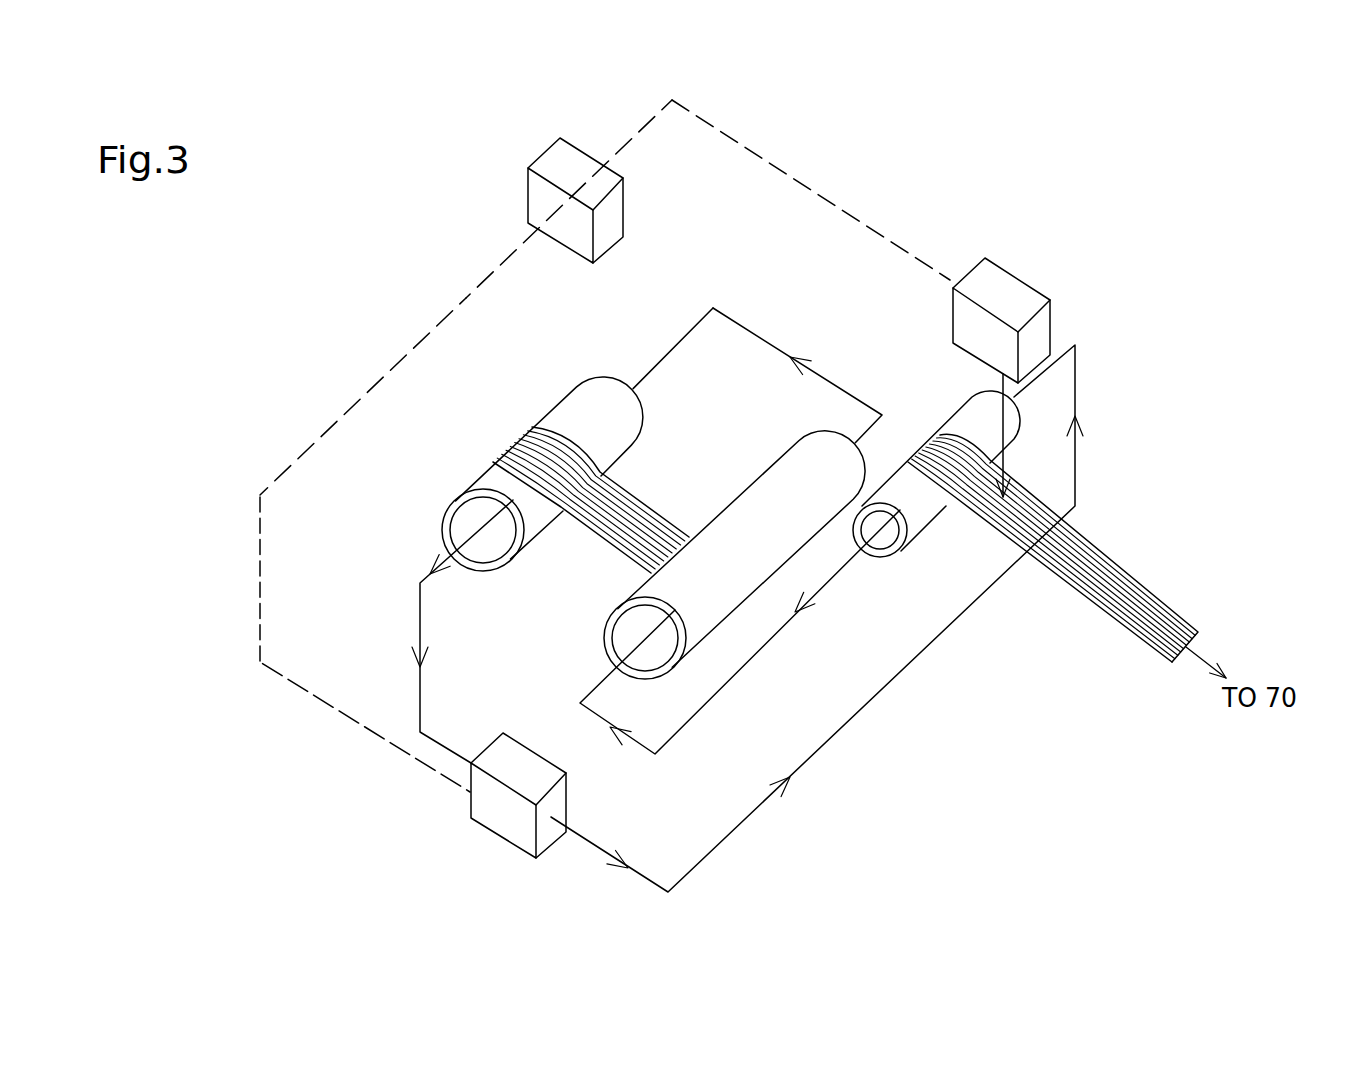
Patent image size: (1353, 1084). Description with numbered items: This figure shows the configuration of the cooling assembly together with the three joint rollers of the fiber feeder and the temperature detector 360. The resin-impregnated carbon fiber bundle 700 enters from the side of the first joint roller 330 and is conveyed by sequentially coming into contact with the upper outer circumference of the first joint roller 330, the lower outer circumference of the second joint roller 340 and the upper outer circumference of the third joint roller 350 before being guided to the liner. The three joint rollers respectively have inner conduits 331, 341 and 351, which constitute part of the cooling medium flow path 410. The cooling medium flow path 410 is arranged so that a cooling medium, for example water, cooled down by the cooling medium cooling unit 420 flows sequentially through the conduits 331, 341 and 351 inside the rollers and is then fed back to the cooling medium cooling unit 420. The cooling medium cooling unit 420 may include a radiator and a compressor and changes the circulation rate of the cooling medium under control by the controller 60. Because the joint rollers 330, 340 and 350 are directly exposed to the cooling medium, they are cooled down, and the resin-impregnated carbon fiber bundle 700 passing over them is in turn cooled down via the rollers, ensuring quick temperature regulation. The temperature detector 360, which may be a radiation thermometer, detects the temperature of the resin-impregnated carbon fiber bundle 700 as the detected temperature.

The controller 60 is at (558, 162).
The first joint roller 330 is at (561, 400).
The inner conduit 331 is at (457, 533).
The second joint roller 340 is at (720, 510).
The inner conduit 341 is at (612, 640).
The third joint roller 350 is at (927, 508).
The inner conduit 351 is at (868, 555).
The temperature detector 360 is at (1000, 285).
The cooling medium flow path 410 is at (735, 322).
The cooling medium cooling unit 420 is at (500, 815).
The resin-impregnated carbon fiber bundle 700 is at (1133, 628).